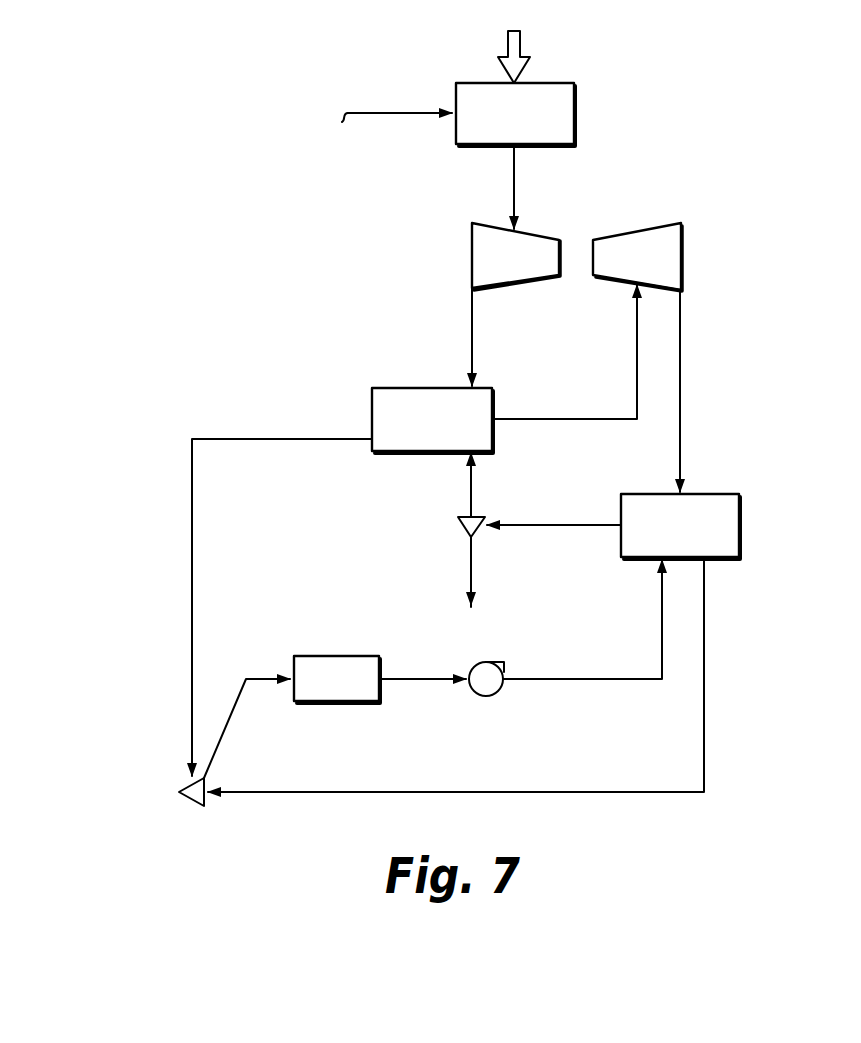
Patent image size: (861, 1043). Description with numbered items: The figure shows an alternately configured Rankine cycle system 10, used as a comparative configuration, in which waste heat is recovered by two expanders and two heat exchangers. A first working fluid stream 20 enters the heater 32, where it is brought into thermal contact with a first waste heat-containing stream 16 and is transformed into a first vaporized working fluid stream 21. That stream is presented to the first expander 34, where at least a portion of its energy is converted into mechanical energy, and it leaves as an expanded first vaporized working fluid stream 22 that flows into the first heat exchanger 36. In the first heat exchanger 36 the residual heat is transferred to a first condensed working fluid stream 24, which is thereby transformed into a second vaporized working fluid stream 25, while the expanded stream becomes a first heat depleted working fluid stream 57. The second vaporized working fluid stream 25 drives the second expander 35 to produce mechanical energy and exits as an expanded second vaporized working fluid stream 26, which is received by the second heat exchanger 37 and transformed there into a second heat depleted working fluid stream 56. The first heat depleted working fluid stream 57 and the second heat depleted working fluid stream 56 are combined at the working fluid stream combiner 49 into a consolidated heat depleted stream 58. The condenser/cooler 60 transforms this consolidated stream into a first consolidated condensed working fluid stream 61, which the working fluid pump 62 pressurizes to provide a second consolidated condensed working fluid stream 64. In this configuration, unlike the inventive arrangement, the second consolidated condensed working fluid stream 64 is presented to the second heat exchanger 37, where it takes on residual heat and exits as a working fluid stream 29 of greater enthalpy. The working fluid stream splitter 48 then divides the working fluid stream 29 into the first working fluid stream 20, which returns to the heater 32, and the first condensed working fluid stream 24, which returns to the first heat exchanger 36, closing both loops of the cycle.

The Rankine cycle system 10 is at (112, 69).
The first waste heat-containing stream 16 is at (522, 42).
The first working fluid stream 20 is at (398, 112).
The first vaporized working fluid stream 21 is at (515, 180).
The expanded first vaporized working fluid stream 22 is at (473, 298).
The first condensed working fluid stream 24 is at (470, 479).
The second vaporized working fluid stream 25 is at (573, 420).
The expanded second vaporized working fluid stream 26 is at (681, 375).
The working fluid stream 29 is at (545, 524).
The heater 32 is at (515, 114).
The first expander 34 is at (516, 256).
The second expander 35 is at (637, 257).
The first heat exchanger 36 is at (432, 420).
The second heat exchanger 37 is at (680, 526).
The working fluid stream splitter 48 is at (473, 537).
The working fluid stream combiner 49 is at (180, 803).
The second heat depleted working fluid stream 56 is at (705, 652).
The first heat depleted working fluid stream 57 is at (192, 501).
The consolidated heat depleted stream 58 is at (232, 720).
The condenser/cooler 60 is at (337, 680).
The first consolidated condensed working fluid stream 61 is at (433, 680).
The working fluid pump 62 is at (490, 697).
The second consolidated condensed working fluid stream 64 is at (606, 680).